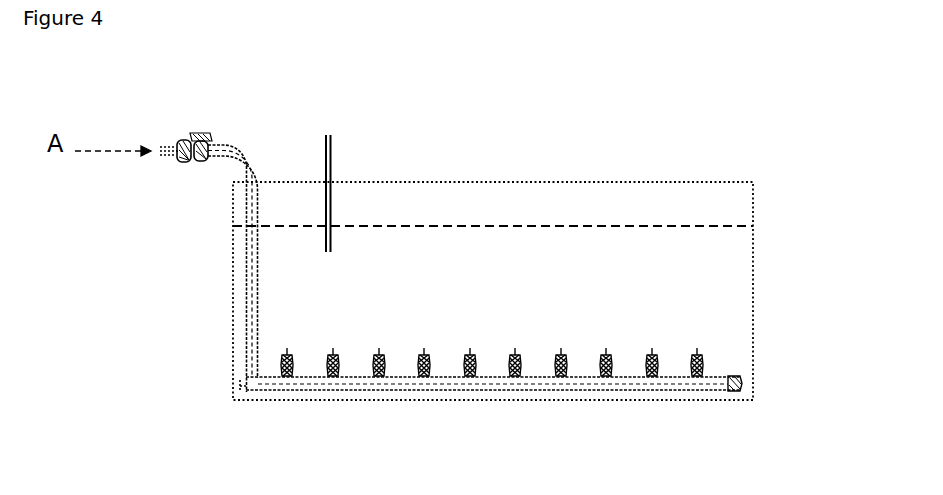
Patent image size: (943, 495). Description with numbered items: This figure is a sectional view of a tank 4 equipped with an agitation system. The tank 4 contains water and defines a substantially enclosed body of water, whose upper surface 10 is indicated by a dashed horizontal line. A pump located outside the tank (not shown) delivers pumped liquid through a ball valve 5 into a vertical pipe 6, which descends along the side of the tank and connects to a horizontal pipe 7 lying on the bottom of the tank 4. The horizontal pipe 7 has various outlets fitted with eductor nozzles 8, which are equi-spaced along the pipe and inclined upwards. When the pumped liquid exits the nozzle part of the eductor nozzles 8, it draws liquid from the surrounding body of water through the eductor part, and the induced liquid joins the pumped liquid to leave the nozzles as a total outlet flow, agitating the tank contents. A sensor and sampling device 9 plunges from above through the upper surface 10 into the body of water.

The tank 4 is at (727, 260).
The ball valve 5 is at (188, 133).
The vertical pipe 6 is at (253, 257).
The horizontal pipe 7 is at (540, 378).
The eductor nozzles 8 is at (415, 365).
The sensor and sampling device 9 is at (331, 157).
The upper surface 10 is at (623, 223).